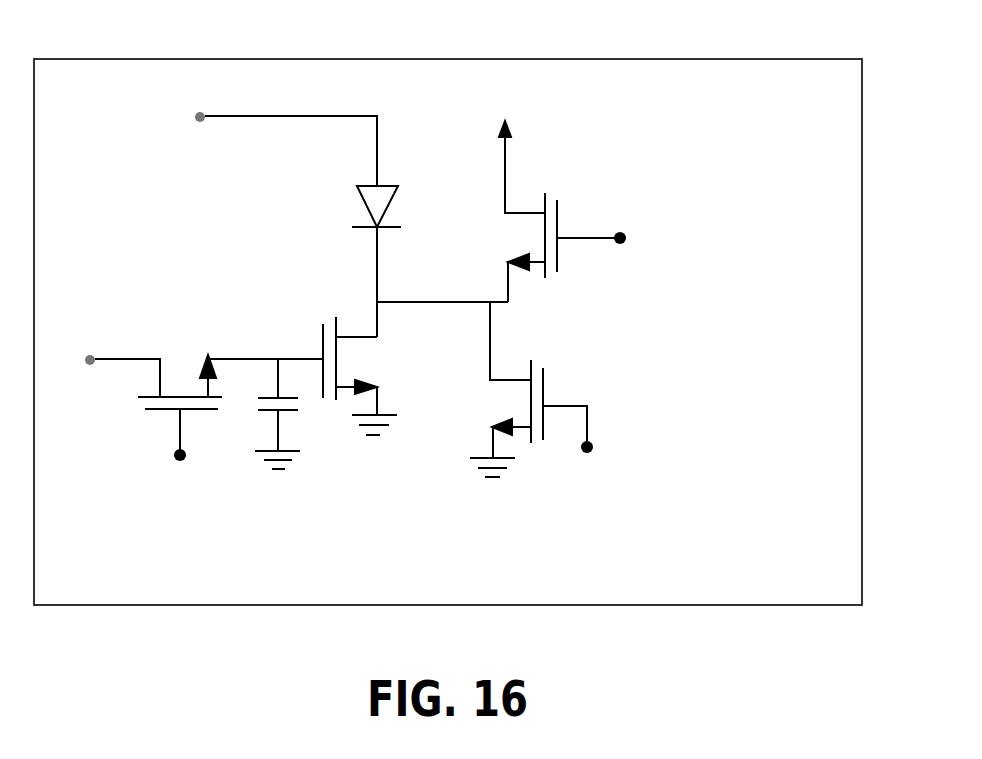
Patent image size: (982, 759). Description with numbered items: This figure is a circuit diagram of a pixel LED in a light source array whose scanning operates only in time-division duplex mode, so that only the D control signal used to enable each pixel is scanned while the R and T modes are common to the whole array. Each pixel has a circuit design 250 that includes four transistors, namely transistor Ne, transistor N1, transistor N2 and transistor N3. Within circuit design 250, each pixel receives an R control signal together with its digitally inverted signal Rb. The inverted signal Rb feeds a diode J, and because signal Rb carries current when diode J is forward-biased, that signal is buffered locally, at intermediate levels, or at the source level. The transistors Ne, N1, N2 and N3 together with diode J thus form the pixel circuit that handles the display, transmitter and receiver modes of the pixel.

The circuit design 250 is at (712, 59).
The transistor N1 is at (311, 376).
The transistor N2 is at (547, 211).
The transistor N3 is at (527, 389).
The diode J is at (383, 206).
The transistor Ne is at (190, 364).